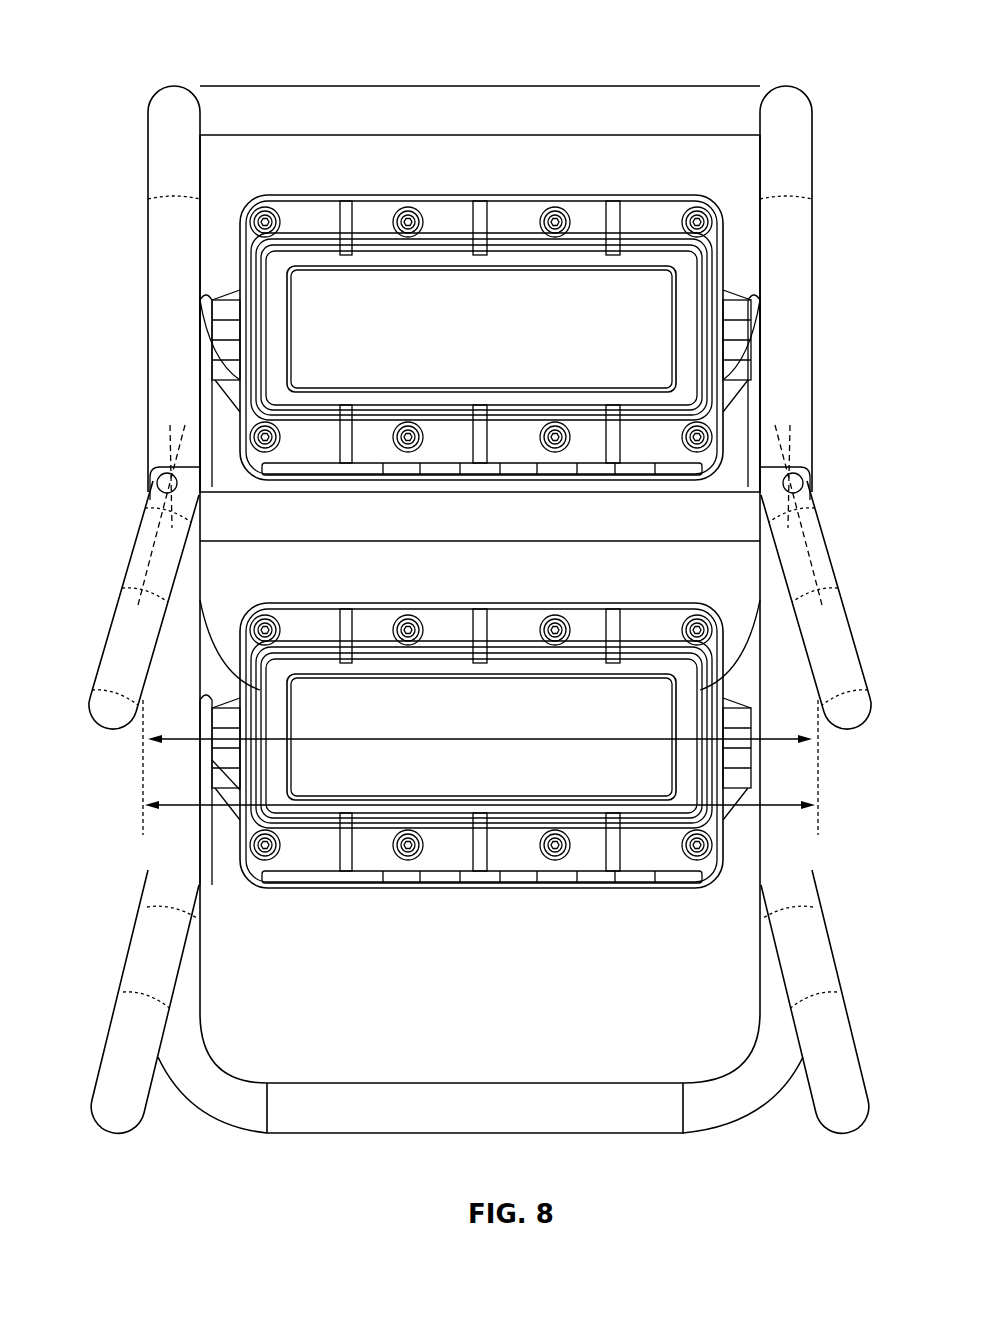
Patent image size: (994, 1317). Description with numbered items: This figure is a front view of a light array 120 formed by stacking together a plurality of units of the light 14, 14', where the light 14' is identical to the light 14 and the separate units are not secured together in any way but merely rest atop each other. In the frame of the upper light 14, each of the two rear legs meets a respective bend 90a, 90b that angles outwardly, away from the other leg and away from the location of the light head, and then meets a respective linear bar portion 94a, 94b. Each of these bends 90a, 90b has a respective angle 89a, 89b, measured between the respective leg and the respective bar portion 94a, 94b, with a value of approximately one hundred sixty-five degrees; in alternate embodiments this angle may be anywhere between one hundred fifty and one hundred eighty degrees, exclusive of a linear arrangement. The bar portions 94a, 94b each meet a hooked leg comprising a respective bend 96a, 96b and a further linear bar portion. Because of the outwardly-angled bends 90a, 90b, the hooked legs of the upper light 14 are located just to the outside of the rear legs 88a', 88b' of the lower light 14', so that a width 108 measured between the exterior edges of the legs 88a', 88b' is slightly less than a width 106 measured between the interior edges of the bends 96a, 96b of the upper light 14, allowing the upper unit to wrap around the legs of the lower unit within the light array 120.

The light array 120 is at (810, 44).
The light 14 is at (509, 289).
The light 14' is at (491, 1001).
The angle 89a is at (812, 472).
The angle 89b is at (158, 470).
The bend 90a is at (805, 487).
The bend 90b is at (157, 490).
The bar portion 94a is at (815, 540).
The bar portion 94b is at (140, 570).
The bend 96a is at (850, 690).
The bend 96b is at (105, 712).
The leg 88a' is at (858, 767).
The leg 88b' is at (114, 767).
The width 106 is at (218, 800).
The width 108 is at (470, 745).